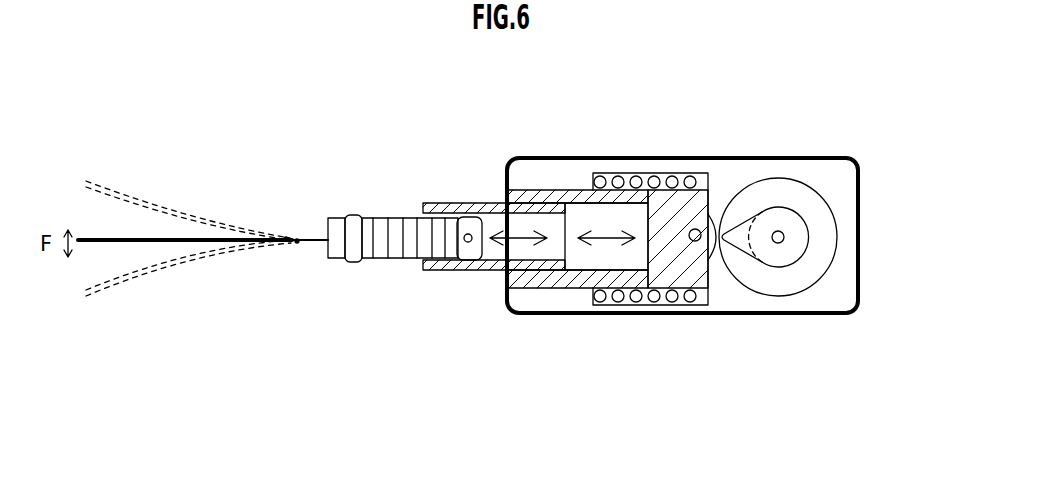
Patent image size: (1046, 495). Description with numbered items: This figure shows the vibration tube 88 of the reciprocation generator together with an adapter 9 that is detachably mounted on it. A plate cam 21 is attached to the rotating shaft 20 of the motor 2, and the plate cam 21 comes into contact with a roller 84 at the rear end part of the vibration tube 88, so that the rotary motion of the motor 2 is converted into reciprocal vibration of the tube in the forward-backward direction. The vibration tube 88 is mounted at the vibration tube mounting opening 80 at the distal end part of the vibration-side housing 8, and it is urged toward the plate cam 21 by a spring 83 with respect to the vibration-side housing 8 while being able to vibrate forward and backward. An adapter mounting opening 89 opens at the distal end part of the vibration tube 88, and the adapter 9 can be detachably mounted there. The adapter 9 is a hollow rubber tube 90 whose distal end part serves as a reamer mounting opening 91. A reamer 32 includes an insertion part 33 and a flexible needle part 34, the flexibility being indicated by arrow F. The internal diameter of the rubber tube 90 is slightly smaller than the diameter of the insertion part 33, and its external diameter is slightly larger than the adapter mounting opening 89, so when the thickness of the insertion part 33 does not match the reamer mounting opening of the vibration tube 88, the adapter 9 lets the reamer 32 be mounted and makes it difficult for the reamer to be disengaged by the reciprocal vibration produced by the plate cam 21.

The motor 2 is at (838, 236).
The vibration-side housing 8 is at (720, 188).
The adapter 9 is at (450, 350).
The rotating shaft 20 is at (782, 234).
The plate cam 21 is at (792, 264).
The reamer 32 is at (316, 168).
The insertion part 33 is at (395, 233).
The needle part 34 is at (198, 240).
The vibration tube mounting opening 80 is at (532, 198).
The spring 83 is at (653, 302).
The roller 84 is at (723, 270).
The vibration tube 88 is at (563, 273).
The adapter mounting opening 89 is at (507, 198).
The rubber tube 90 is at (477, 270).
The reamer mounting opening 91 is at (423, 262).